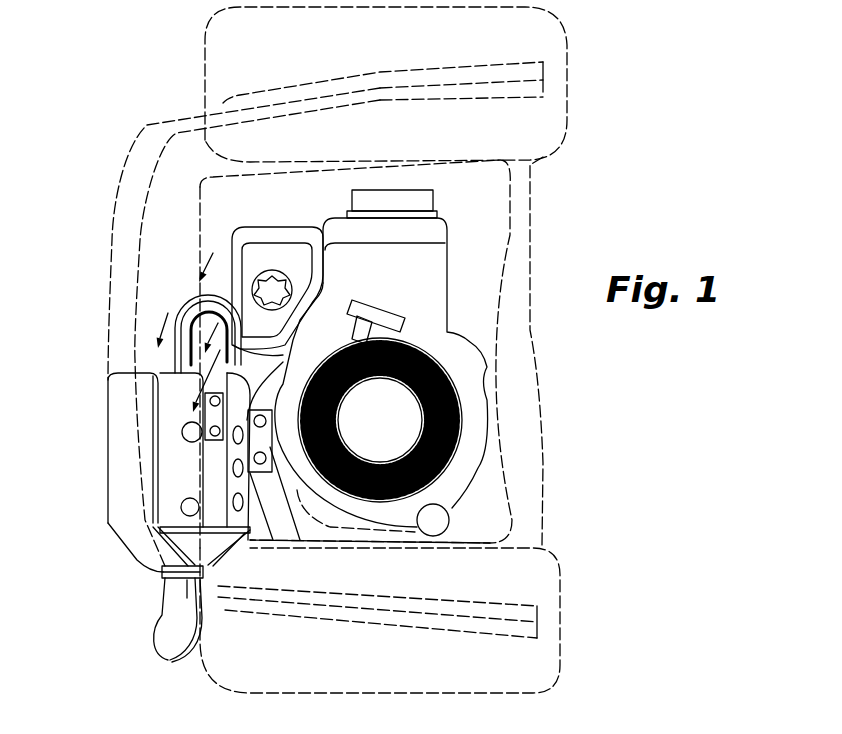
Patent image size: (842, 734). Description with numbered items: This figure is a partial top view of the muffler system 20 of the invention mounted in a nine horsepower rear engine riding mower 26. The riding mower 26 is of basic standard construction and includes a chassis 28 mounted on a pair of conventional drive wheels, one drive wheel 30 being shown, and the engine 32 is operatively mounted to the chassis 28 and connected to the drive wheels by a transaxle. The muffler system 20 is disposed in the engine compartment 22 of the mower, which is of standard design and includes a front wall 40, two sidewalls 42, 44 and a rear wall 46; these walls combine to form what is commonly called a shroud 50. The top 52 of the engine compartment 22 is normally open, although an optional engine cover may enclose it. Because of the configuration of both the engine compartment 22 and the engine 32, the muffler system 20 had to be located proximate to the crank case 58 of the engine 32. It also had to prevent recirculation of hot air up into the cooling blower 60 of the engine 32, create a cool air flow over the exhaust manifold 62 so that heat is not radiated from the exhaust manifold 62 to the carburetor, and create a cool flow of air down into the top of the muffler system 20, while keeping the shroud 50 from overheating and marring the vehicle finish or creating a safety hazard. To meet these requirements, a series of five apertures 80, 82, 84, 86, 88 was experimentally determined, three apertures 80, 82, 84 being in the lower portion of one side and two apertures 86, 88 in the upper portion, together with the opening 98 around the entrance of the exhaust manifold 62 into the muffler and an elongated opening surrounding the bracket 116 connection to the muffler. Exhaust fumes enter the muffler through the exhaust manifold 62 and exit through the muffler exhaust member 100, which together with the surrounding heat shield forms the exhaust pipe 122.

The muffler system 20 is at (152, 502).
The engine compartment 22 is at (263, 217).
The riding mower 26 is at (675, 167).
The chassis 28 is at (565, 240).
The drive wheel 30 is at (568, 70).
The engine 32 is at (452, 233).
The front wall 40 is at (532, 453).
The sidewall 42 is at (290, 135).
The sidewall 44 is at (372, 598).
The rear wall 46 is at (116, 250).
The shroud 50 is at (118, 300).
The top 52 is at (483, 430).
The crank case 58 is at (300, 535).
The cooling blower 60 is at (462, 385).
The exhaust manifold 62 is at (200, 305).
The aperture 80 is at (243, 506).
The aperture 82 is at (252, 475).
The aperture 84 is at (278, 387).
The aperture 86 is at (182, 432).
The aperture 88 is at (190, 497).
The opening 98 is at (170, 372).
The muffler exhaust member 100 is at (177, 662).
The bracket 116 is at (295, 506).
The exhaust pipe 122 is at (143, 656).